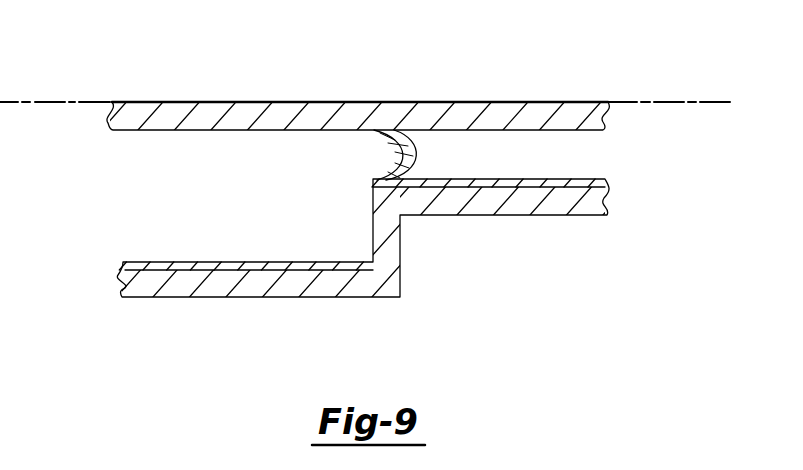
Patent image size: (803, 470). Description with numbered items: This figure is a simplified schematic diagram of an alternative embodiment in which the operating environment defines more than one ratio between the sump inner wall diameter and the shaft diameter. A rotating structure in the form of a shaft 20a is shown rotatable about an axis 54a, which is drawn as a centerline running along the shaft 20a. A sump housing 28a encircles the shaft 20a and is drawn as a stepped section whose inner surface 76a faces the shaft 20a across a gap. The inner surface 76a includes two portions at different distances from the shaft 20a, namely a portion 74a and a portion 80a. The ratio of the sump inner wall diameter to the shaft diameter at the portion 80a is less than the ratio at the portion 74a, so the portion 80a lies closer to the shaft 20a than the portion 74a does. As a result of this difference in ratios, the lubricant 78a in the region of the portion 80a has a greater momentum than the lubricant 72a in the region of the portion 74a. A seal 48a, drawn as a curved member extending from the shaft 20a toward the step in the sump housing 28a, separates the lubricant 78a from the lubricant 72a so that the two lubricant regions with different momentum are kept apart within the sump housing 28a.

The shaft 20a is at (567, 113).
The axis 54a is at (703, 102).
The seal 48a is at (402, 158).
The inner surface 76a is at (152, 208).
The sump housing 28a is at (278, 312).
The lubricant 72a is at (323, 266).
The portion 74a is at (226, 262).
The lubricant 78a is at (453, 182).
The portion 80a is at (565, 181).